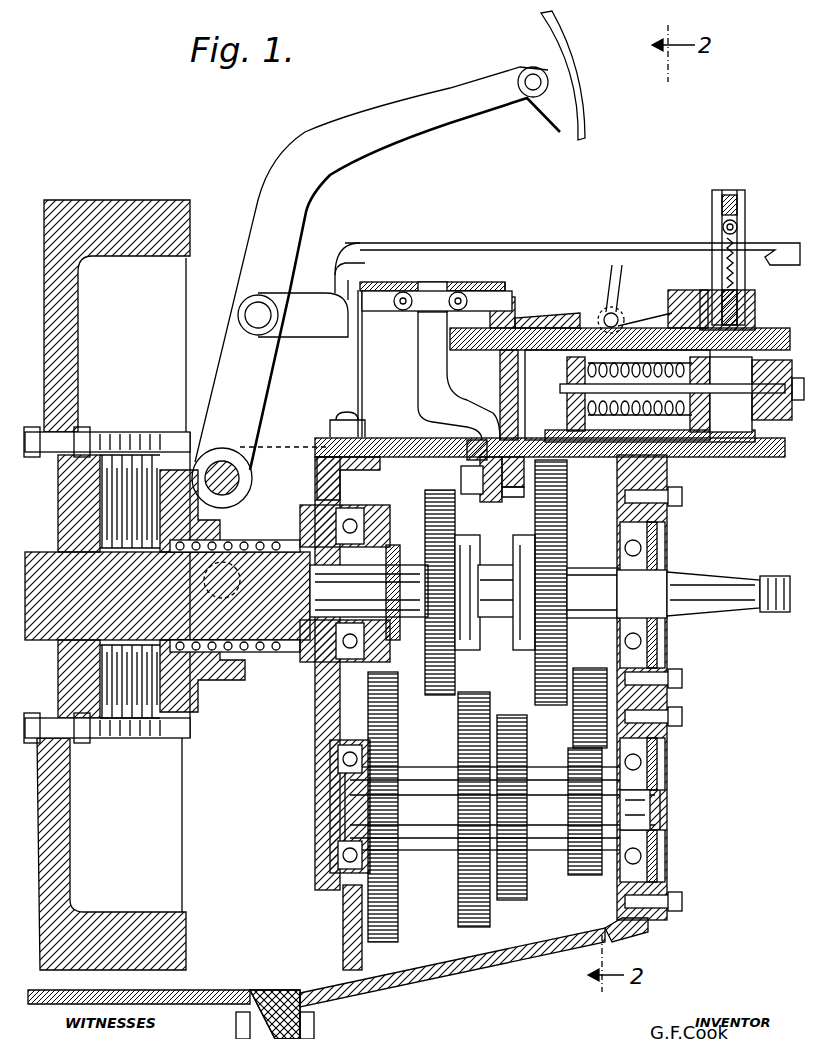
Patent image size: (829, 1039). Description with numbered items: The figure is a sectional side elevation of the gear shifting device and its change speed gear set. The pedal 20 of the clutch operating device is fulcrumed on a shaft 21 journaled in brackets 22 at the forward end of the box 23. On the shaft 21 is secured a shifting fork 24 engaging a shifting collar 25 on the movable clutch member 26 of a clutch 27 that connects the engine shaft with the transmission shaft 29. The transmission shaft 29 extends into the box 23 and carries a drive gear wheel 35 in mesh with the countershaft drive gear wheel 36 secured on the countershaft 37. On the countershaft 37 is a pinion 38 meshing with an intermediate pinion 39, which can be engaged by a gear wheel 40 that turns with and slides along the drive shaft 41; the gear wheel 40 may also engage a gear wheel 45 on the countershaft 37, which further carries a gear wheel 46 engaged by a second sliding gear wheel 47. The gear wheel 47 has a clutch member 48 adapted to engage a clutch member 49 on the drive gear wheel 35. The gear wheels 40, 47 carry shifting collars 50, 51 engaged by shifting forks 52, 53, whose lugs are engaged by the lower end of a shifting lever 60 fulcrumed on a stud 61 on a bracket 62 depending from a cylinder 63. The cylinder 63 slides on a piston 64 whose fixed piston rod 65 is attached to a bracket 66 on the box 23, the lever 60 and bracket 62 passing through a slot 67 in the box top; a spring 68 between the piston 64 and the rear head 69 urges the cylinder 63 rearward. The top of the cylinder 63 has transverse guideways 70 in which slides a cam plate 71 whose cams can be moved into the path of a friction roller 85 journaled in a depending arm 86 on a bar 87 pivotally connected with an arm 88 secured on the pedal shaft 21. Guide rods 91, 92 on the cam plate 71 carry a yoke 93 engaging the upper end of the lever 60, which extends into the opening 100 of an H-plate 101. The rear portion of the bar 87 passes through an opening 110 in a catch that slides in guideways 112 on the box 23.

The pedal 20 is at (340, 114).
The shaft 21 is at (240, 477).
The brackets 22 is at (291, 450).
The box 23 is at (504, 950).
The shifting fork 24 is at (240, 580).
The shifting collar 25 is at (220, 662).
The movable clutch member 26 is at (155, 694).
The clutch 27 is at (113, 585).
The transmission shaft 29 is at (272, 642).
The drive gear wheel 35 is at (381, 505).
The countershaft drive gear wheel 36 is at (392, 718).
The countershaft 37 is at (640, 799).
The pinion 38 is at (578, 875).
The intermediate pinion 39 is at (583, 668).
The gear wheel 40 is at (567, 521).
The drive shaft 41 is at (583, 560).
The gear wheel 45 is at (515, 789).
The gear wheel 46 is at (458, 746).
The gear wheel 47 is at (430, 655).
The clutch member 48 is at (385, 587).
The clutch member 49 is at (397, 545).
The shifting collar 50 is at (530, 582).
The shifting collar 51 is at (470, 592).
The shifting fork 52 is at (519, 535).
The shifting fork 53 is at (464, 535).
The shifting lever 60 is at (478, 425).
The stud 61 is at (460, 486).
The bracket 62 is at (522, 472).
The cylinder 63 is at (500, 369).
The piston 64 is at (567, 373).
The piston rod 65 is at (727, 394).
The bracket 66 is at (790, 418).
The slot 67 is at (425, 438).
The spring 68 is at (641, 366).
The rear head 69 is at (710, 366).
The transverse guideways 70 is at (443, 333).
The cam plate 71 is at (628, 328).
The friction roller 85 is at (600, 318).
The depending arm 86 is at (619, 279).
The bar 87 is at (563, 243).
The arm 88 is at (268, 360).
The guide rod 91 is at (458, 288).
The guide rod 92 is at (394, 301).
The yoke 93 is at (420, 312).
The opening 100 is at (440, 282).
The H-plate 101 is at (500, 282).
The opening 110 is at (738, 232).
The guideways 112 is at (746, 200).